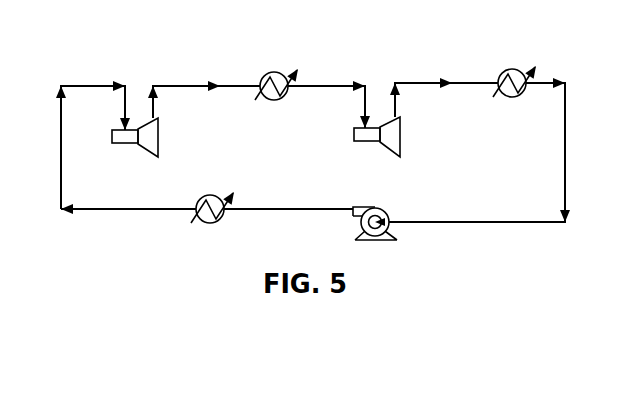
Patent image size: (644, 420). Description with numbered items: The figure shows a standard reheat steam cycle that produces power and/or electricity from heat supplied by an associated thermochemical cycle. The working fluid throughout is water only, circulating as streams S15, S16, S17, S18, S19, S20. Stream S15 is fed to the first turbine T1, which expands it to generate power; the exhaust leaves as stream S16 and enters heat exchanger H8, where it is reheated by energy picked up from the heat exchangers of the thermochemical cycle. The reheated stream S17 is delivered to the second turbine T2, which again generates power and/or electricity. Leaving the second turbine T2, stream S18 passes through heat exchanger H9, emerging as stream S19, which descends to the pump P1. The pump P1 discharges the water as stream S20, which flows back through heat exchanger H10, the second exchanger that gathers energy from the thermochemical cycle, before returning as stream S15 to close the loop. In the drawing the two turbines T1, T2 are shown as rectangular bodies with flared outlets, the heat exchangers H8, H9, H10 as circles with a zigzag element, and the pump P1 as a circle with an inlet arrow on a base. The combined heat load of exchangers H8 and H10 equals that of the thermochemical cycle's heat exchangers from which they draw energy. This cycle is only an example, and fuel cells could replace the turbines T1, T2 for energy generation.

The stream S15 is at (93, 137).
The stream S16 is at (204, 91).
The stream S17 is at (329, 96).
The stream S18 is at (444, 90).
The stream S19 is at (497, 150).
The stream S20 is at (207, 200).
The turbine T1 is at (135, 145).
The turbine T2 is at (377, 144).
The heat exchanger H8 is at (278, 76).
The heat exchanger H9 is at (516, 72).
The heat exchanger H10 is at (214, 219).
The pump P1 is at (375, 237).